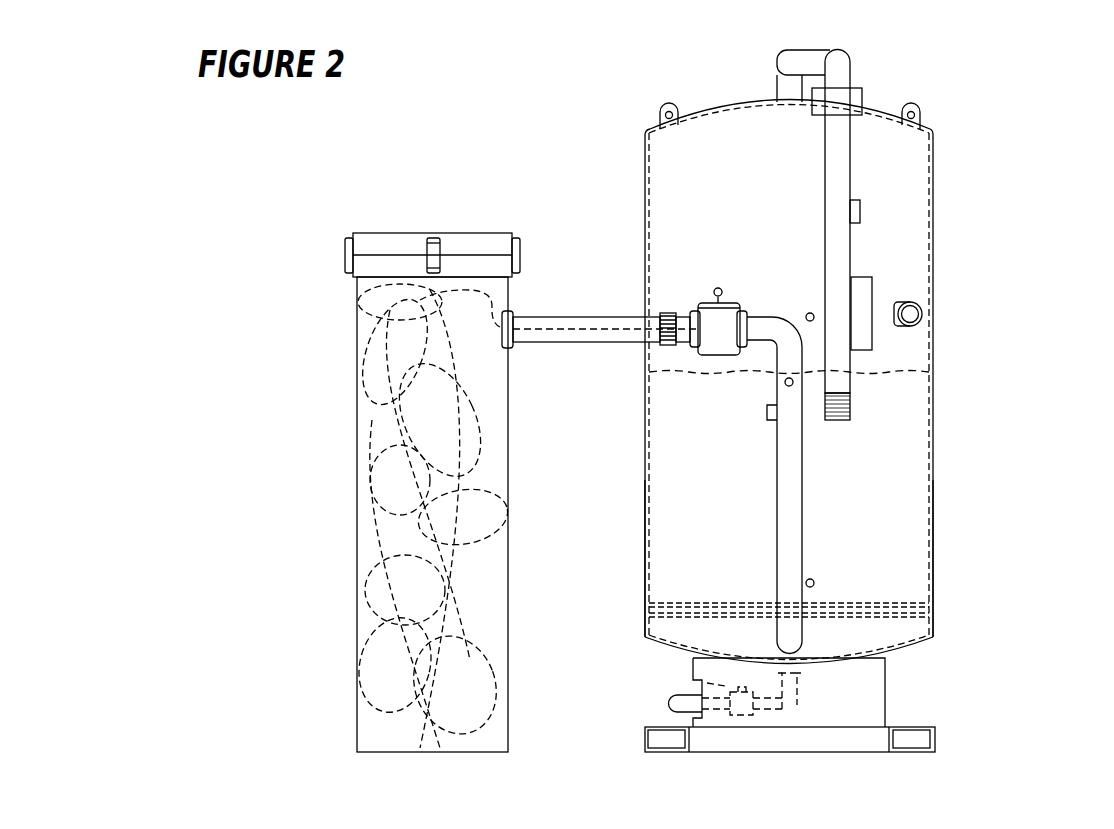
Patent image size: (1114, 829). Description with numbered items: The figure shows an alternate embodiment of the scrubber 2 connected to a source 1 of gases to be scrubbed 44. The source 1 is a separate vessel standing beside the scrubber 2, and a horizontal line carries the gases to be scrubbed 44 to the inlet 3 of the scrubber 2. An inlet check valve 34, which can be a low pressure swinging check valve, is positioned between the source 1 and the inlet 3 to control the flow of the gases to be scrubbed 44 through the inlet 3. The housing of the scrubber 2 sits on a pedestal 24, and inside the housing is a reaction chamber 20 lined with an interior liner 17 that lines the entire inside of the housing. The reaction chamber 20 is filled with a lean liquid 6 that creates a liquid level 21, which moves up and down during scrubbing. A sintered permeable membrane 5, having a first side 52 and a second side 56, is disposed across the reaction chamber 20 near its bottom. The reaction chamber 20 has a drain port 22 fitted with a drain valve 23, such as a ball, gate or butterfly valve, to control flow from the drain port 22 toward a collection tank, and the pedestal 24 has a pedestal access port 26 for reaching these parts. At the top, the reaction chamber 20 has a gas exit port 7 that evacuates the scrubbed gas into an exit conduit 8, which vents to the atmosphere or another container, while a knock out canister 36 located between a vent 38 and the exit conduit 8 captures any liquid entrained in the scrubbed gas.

The scrubber 2 is at (1034, 88).
The source 1 is at (358, 514).
The gases to be scrubbed 44 is at (597, 330).
The inlet check valve 34 is at (716, 314).
The reaction chamber 20 is at (755, 222).
The interior liner 17 is at (718, 108).
The lean liquid 6 is at (863, 457).
The inlet 3 is at (778, 648).
The liquid level 21 is at (728, 372).
The sintered permeable membrane 5 is at (885, 610).
The second side 56 is at (885, 603).
The first side 52 is at (885, 615).
The drain port 22 is at (792, 690).
The knock out canister 36 is at (843, 102).
The exit conduit 8 is at (808, 62).
The gas exit port 7 is at (787, 93).
The vent 38 is at (865, 302).
The pedestal 24 is at (885, 695).
The pedestal access port 26 is at (700, 694).
The drain valve 23 is at (740, 705).